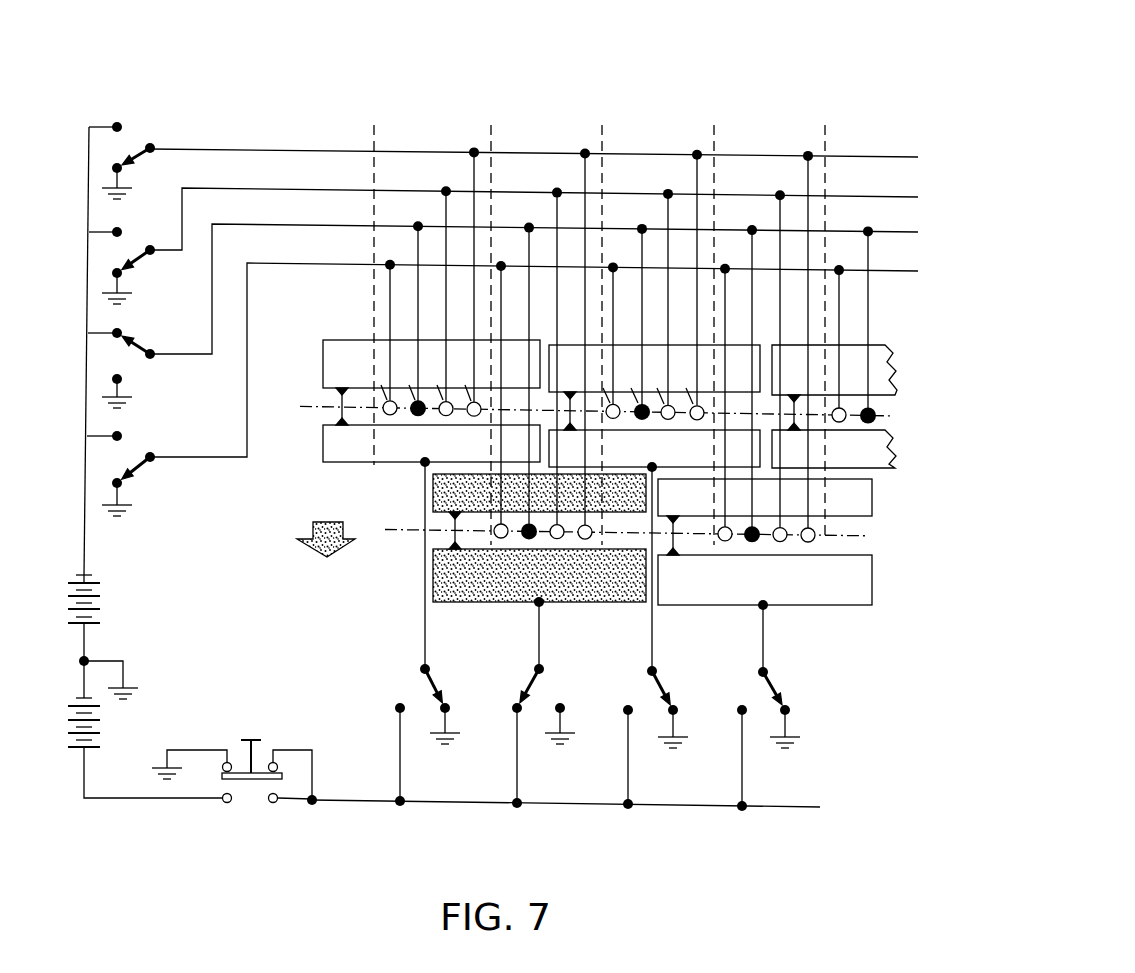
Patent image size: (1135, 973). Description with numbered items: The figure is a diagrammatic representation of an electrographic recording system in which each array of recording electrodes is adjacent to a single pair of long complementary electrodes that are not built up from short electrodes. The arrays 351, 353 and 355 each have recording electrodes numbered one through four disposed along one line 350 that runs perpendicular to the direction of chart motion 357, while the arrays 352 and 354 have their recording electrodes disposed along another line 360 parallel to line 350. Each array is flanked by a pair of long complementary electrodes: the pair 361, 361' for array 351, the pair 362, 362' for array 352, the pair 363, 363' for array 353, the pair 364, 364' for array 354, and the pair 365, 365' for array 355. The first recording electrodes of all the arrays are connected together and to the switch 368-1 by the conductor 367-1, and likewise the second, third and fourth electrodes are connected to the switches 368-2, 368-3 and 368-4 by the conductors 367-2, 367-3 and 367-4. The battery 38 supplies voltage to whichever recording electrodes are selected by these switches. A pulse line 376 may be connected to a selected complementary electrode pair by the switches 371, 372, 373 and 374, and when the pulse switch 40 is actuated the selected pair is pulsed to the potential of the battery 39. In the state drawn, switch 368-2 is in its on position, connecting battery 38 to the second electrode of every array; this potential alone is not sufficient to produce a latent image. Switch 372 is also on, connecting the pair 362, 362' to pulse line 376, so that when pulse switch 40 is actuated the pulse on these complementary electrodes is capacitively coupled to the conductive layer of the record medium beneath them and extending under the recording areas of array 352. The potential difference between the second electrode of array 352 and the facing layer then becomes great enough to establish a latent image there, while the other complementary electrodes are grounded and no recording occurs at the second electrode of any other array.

The battery 38 is at (95, 604).
The battery 39 is at (97, 727).
The pulse switch 40 is at (256, 787).
The line 350 is at (322, 403).
The array 351 is at (491, 125).
The array 352 is at (602, 125).
The array 353 is at (714, 125).
The array 354 is at (823, 125).
The array 355 is at (830, 125).
The direction of chart motion 357 is at (326, 520).
The line 360 is at (395, 531).
The complementary electrode 361 is at (410, 359).
The complementary electrode 361' is at (407, 425).
The complementary electrode 362 is at (539, 574).
The complementary electrode 362' is at (509, 493).
The complementary electrode 363 is at (654, 297).
The complementary electrode 363' is at (654, 429).
The complementary electrode 364 is at (765, 577).
The complementary electrode 364' is at (790, 497).
The complementary electrode 365 is at (844, 358).
The complementary electrode 365' is at (834, 431).
The conductor 367-1 is at (255, 263).
The conductor 367-2 is at (228, 224).
The conductor 367-3 is at (240, 188).
The conductor 367-4 is at (260, 150).
The switch 368-1 is at (123, 452).
The switch 368-2 is at (128, 362).
The switch 368-3 is at (115, 252).
The switch 368-4 is at (115, 149).
The switch 371 is at (423, 696).
The switch 372 is at (537, 703).
The switch 373 is at (655, 708).
The switch 374 is at (768, 708).
The pulse line 376 is at (600, 805).